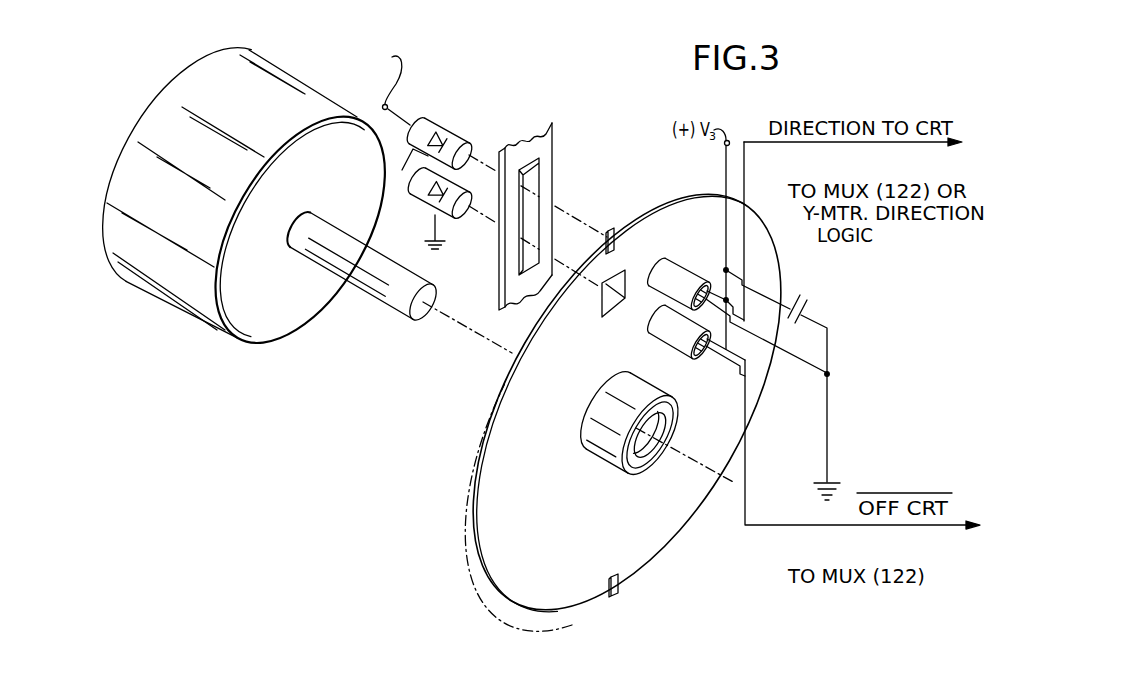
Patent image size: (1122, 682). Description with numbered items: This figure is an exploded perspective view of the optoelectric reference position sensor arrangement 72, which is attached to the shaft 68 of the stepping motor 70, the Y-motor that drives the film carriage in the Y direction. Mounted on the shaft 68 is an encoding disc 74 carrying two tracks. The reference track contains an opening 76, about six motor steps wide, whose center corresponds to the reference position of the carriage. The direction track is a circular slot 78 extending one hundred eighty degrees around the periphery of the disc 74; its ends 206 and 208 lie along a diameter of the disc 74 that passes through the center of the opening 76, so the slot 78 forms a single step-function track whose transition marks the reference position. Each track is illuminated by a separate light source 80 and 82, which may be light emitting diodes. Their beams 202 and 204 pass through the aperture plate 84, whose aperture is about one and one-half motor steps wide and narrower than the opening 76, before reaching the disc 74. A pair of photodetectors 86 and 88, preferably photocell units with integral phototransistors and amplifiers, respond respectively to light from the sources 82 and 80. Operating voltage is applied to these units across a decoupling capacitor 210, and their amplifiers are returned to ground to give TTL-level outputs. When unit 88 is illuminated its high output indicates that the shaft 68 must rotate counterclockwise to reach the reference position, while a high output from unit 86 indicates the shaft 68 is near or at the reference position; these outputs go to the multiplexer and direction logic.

The shaft 68 is at (318, 258).
The stepping motor 70 is at (211, 64).
The optoelectric reference position sensor arrangement 72 is at (600, 96).
The encoding disc 74 is at (512, 432).
The opening 76 is at (606, 312).
The slot 78 is at (477, 577).
The light source 80 is at (443, 120).
The light source 82 is at (421, 208).
The aperture plate 84 is at (556, 150).
The photodetector 86 is at (686, 352).
The photodetector 88 is at (668, 272).
The beam 202 is at (575, 222).
The beam 204 is at (500, 305).
The end of the slot 206 is at (614, 230).
The end of the slot 208 is at (618, 585).
The decoupling capacitor 210 is at (810, 312).